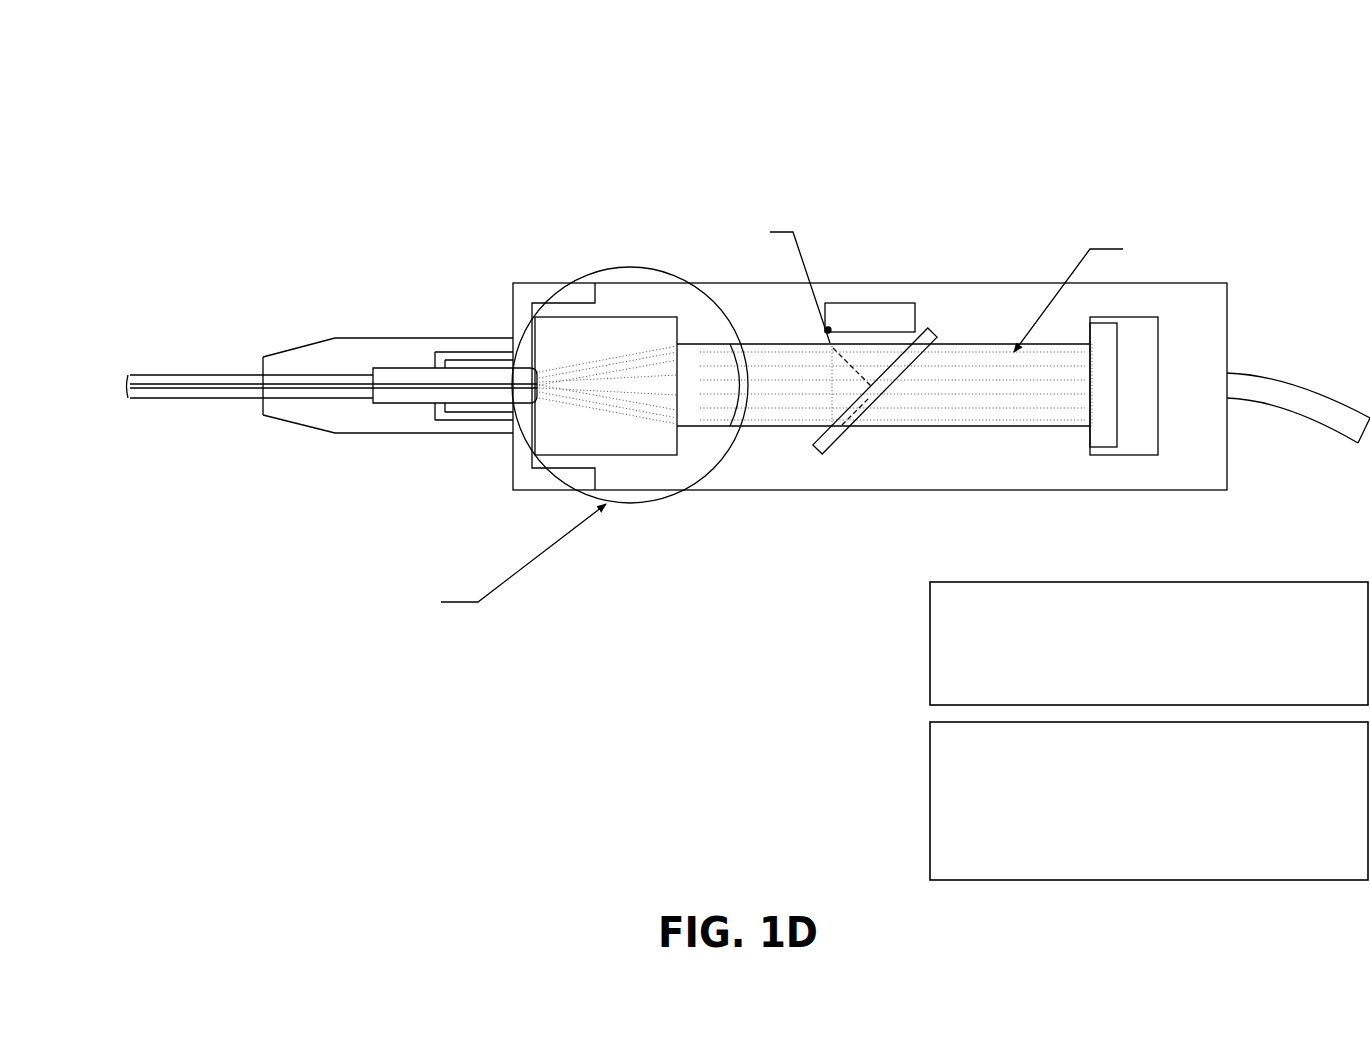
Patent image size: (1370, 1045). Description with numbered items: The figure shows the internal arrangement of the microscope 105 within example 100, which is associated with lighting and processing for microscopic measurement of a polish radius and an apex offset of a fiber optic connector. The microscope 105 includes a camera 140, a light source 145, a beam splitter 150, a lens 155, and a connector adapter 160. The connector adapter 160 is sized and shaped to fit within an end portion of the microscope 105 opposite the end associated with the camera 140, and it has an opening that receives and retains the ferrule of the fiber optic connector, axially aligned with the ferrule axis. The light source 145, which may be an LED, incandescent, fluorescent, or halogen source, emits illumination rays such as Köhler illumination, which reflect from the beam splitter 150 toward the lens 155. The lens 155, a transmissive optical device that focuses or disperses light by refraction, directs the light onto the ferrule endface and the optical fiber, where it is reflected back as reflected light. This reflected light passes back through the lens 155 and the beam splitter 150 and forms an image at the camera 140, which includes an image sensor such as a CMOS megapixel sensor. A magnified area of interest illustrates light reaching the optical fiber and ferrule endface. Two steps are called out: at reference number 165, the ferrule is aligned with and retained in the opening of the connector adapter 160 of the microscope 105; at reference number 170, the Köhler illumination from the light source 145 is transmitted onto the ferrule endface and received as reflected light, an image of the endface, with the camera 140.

The example 100 is at (224, 54).
The microscope 105 is at (527, 283).
The camera 140 is at (1099, 422).
The light source 145 is at (868, 313).
The beam splitter 150 is at (837, 423).
The lens 155 is at (697, 413).
The connector adapter 160 is at (523, 469).
The aligning step 165 is at (1149, 643).
The transmitting and receiving step 170 is at (1149, 801).